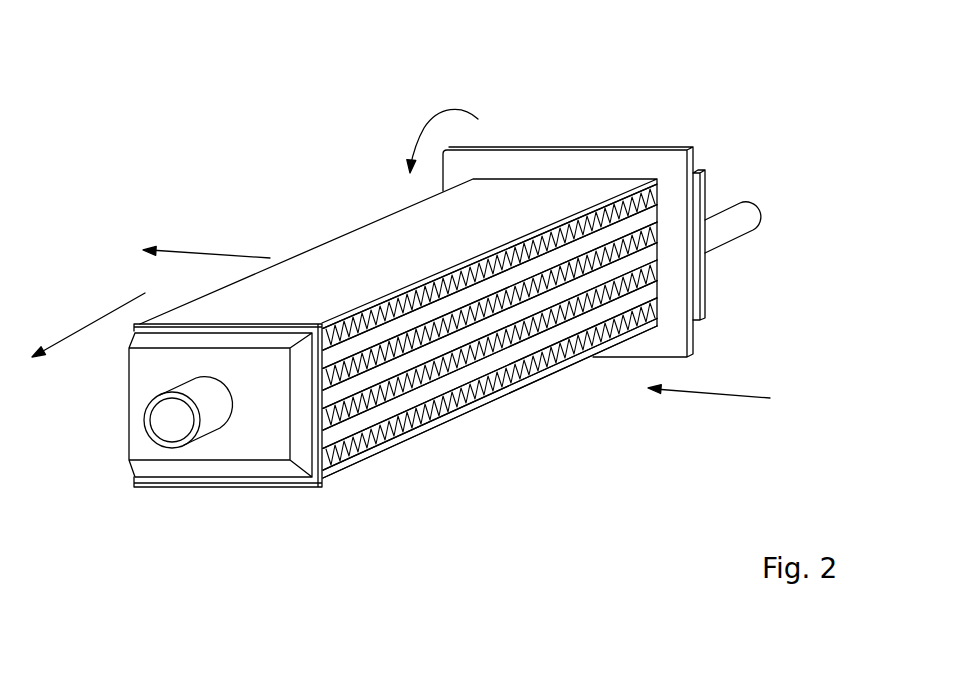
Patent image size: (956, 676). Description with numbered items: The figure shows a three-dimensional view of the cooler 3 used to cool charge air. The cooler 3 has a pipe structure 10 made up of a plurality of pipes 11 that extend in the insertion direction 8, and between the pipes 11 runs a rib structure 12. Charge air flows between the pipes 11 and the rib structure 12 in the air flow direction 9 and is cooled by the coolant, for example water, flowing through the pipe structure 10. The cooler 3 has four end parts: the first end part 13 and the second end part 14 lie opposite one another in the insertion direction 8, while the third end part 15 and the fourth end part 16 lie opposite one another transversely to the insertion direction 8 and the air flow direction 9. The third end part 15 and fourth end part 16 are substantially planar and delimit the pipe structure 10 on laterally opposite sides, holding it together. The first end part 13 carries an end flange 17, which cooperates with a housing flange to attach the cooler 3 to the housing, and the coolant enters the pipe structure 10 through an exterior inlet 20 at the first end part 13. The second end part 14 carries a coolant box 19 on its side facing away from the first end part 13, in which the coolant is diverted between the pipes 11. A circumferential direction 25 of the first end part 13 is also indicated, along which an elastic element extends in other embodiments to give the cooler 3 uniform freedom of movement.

The cooler 3 is at (211, 149).
The insertion direction 8 is at (95, 322).
The air flow direction 9 is at (212, 250).
The pipe structure 10 is at (488, 373).
The pipes 11 is at (420, 318).
The rib structure 12 is at (528, 350).
The first end part 13 is at (667, 141).
The second end part 14 is at (172, 494).
The third end part 15 is at (337, 232).
The fourth end part 16 is at (388, 458).
The end flange 17 is at (692, 272).
The coolant box 19 is at (228, 447).
The exterior inlet 20 is at (750, 229).
The circumferential direction 25 is at (428, 115).